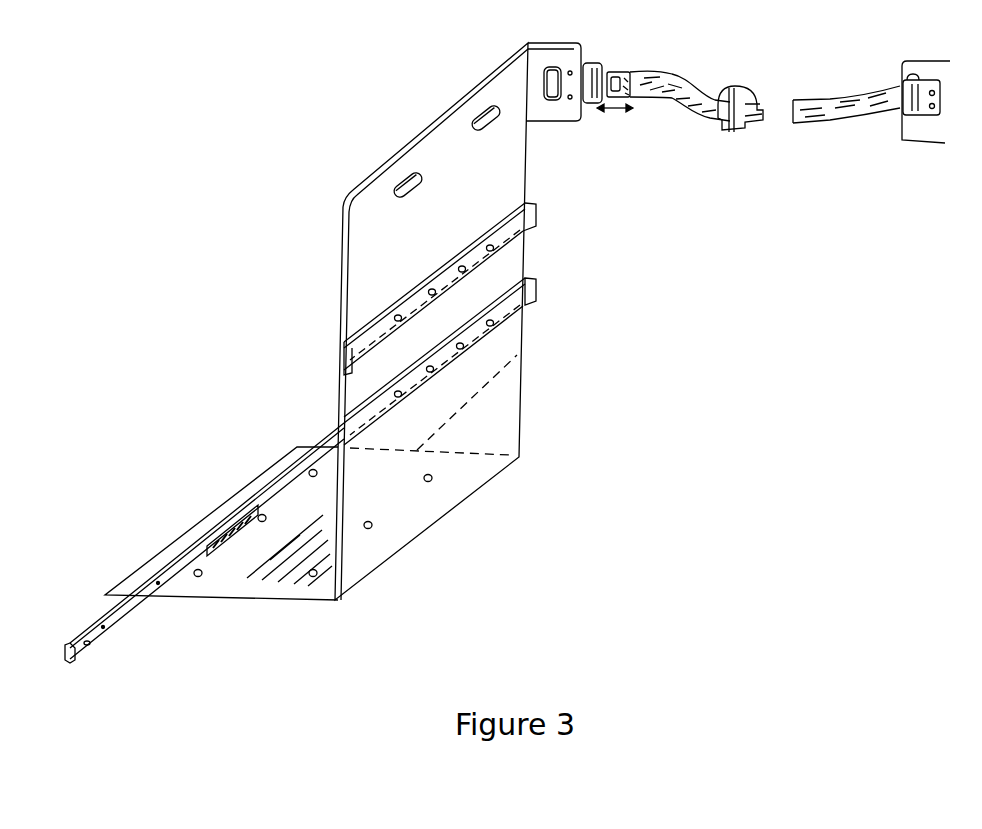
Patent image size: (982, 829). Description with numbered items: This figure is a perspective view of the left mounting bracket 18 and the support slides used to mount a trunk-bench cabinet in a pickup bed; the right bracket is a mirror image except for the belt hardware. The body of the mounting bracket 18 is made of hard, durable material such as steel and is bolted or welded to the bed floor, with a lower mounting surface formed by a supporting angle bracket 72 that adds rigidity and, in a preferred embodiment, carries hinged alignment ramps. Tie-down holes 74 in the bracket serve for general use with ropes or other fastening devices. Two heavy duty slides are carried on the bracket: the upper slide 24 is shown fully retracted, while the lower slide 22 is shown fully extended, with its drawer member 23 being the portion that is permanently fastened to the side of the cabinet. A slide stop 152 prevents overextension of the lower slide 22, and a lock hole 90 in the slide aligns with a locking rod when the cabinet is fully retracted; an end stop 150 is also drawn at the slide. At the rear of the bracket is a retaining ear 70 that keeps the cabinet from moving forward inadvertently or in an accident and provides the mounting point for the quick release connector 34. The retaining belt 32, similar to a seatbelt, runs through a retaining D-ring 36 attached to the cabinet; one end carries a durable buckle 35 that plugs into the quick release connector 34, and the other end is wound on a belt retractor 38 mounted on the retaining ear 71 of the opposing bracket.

The mounting bracket 18 is at (457, 487).
The lower slide 22 is at (503, 315).
The drawer member 23 is at (123, 618).
The upper slide 24 is at (512, 237).
The retaining belt 32 is at (820, 130).
The quick release connector 34 is at (601, 63).
The buckle 35 is at (622, 70).
The retaining D-ring 36 is at (747, 137).
The belt retractor 38 is at (902, 78).
The retaining ear 70 is at (552, 113).
The retaining ear 71 is at (927, 128).
The supporting angle bracket 72 is at (287, 580).
The tie-down holes 74 is at (487, 120).
The lock hole 90 is at (78, 652).
The rail stop 150 is at (540, 292).
The slide stop 152 is at (207, 525).